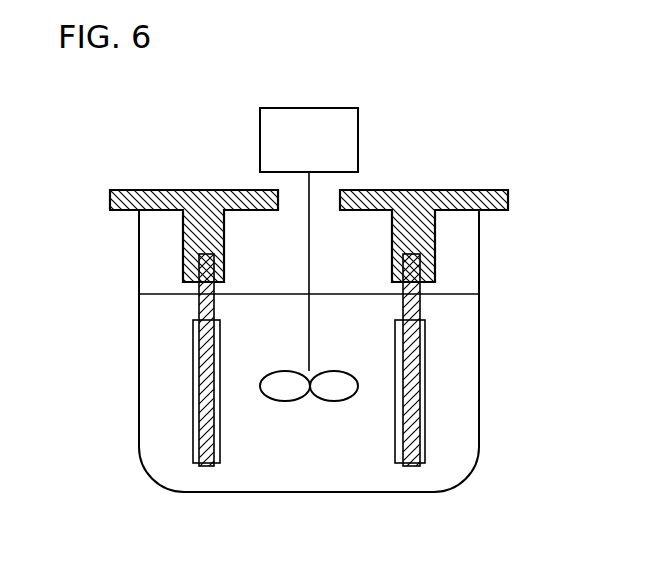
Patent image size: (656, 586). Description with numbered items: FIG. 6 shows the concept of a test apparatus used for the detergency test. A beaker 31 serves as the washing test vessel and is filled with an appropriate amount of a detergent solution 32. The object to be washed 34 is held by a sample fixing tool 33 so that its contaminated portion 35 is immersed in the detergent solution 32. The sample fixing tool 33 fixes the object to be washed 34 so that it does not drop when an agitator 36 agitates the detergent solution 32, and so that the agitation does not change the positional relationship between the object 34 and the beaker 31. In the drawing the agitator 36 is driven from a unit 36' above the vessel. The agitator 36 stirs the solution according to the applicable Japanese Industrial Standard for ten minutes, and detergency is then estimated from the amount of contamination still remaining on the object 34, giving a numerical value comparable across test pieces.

The beaker 31 is at (480, 450).
The detergent solution 32 is at (455, 405).
The sample fixing tool 33 is at (133, 192).
The object to be washed 34 is at (198, 302).
The contaminated portion 35 is at (193, 392).
The agitator 36 is at (290, 360).
The stirrer motor 36' is at (374, 140).